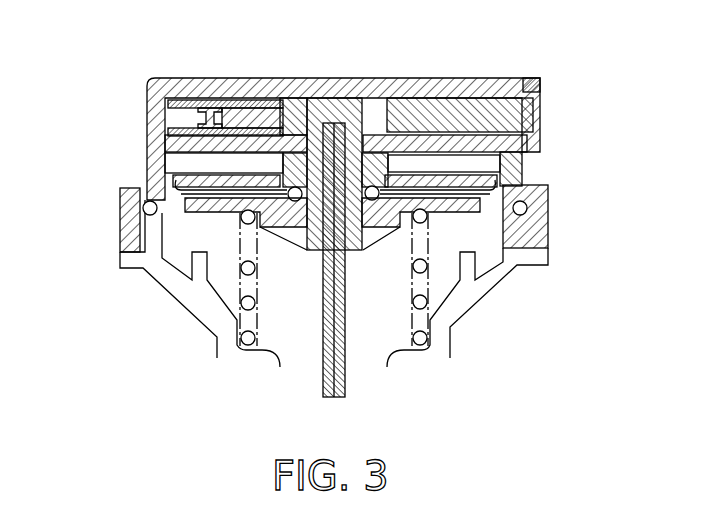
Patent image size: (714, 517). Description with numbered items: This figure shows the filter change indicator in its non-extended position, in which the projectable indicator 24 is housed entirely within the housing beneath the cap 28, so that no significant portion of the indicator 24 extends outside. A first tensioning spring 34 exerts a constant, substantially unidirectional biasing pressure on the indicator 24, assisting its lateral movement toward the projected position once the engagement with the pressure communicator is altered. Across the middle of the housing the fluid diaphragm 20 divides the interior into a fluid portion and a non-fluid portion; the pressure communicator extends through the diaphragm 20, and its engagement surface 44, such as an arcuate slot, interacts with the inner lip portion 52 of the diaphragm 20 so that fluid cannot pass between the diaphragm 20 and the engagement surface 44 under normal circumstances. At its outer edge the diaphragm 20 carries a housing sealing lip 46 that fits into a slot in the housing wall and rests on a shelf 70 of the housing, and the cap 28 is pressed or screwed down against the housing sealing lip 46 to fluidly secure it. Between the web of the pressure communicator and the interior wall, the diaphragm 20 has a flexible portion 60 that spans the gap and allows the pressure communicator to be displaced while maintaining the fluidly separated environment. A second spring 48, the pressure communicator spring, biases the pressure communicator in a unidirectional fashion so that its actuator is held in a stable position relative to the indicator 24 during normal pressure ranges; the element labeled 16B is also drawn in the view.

The shaft 16B is at (343, 290).
The fluid diaphragm 20 is at (440, 200).
The projectable indicator 24 is at (470, 103).
The cap 28 is at (270, 78).
The first tensioning spring 34 is at (176, 80).
The engagement surface 44 is at (398, 215).
The housing sealing lip 46 is at (543, 212).
The second spring 48 is at (395, 248).
The inner lip portion 52 is at (297, 232).
The flexible portion 60 is at (523, 173).
The shelf 70 is at (120, 240).